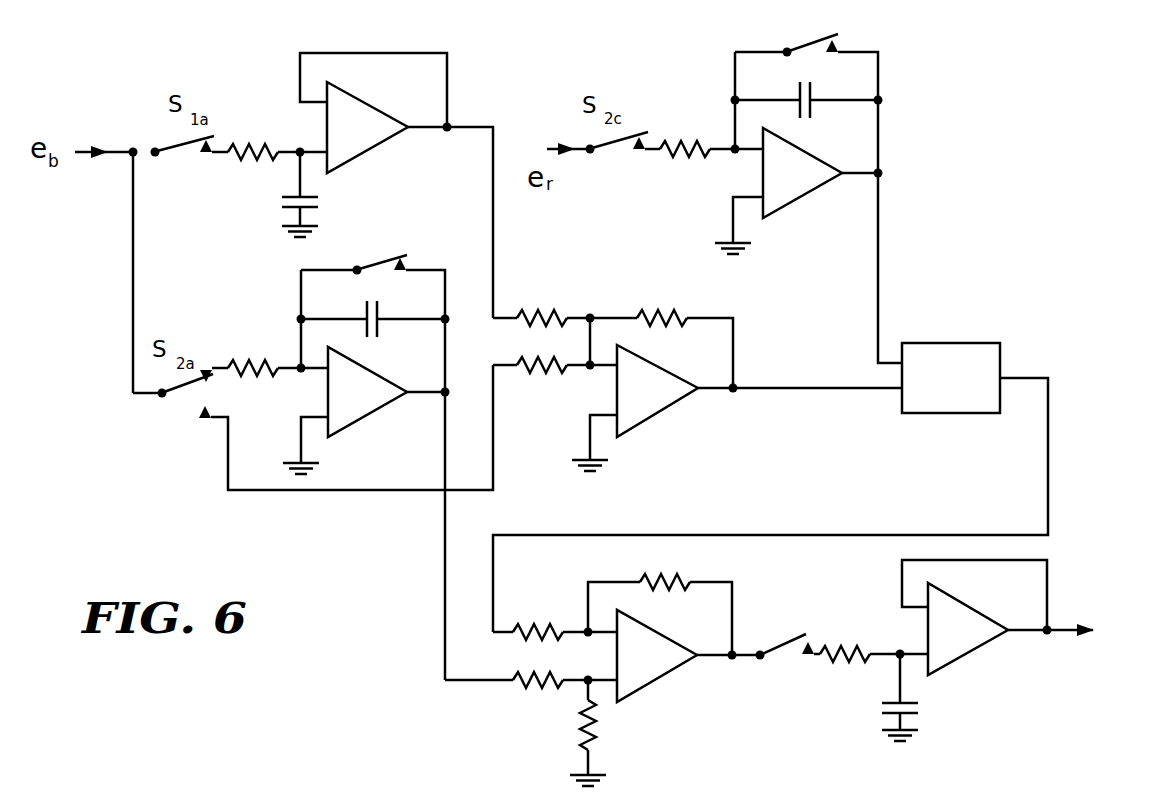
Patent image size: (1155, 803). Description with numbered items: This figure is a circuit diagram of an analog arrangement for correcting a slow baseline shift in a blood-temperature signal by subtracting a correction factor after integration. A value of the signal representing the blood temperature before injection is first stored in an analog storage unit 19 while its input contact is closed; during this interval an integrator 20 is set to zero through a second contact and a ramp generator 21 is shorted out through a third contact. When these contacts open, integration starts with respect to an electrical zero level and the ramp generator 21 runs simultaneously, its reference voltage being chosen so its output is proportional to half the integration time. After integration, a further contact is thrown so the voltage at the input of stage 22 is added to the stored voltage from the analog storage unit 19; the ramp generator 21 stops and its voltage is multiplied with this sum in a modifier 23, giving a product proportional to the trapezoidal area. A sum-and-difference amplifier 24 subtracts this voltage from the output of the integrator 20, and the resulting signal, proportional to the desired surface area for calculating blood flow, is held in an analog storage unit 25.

The analog storage unit 19 is at (374, 158).
The integrator 20 is at (366, 431).
The ramp generator 21 is at (804, 209).
The stage 22 is at (677, 418).
The modifier 23 is at (946, 437).
The sum-and-difference amplifier 24 is at (645, 708).
The analog storage unit 25 is at (975, 675).